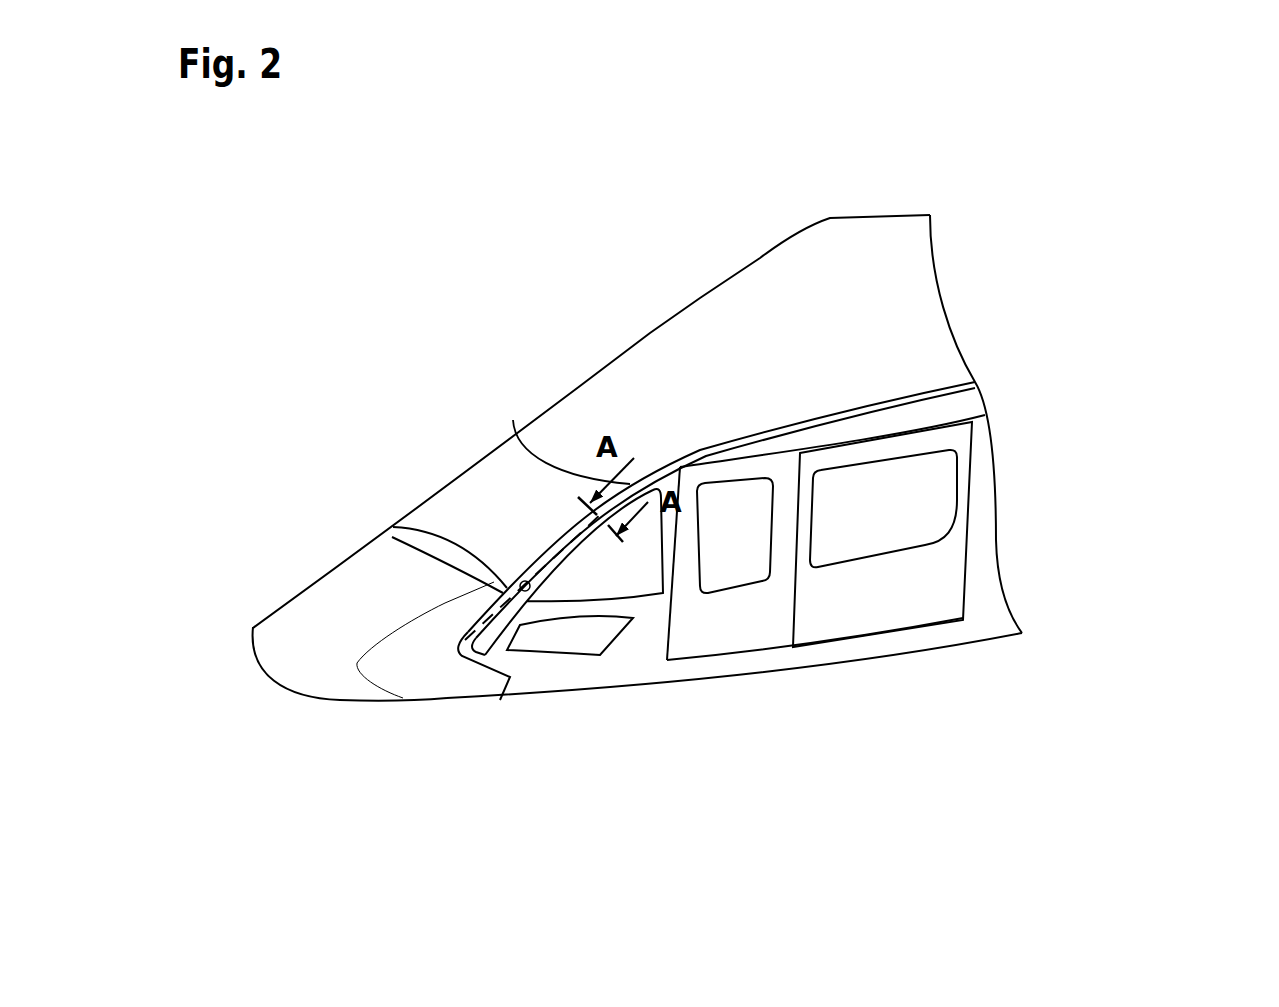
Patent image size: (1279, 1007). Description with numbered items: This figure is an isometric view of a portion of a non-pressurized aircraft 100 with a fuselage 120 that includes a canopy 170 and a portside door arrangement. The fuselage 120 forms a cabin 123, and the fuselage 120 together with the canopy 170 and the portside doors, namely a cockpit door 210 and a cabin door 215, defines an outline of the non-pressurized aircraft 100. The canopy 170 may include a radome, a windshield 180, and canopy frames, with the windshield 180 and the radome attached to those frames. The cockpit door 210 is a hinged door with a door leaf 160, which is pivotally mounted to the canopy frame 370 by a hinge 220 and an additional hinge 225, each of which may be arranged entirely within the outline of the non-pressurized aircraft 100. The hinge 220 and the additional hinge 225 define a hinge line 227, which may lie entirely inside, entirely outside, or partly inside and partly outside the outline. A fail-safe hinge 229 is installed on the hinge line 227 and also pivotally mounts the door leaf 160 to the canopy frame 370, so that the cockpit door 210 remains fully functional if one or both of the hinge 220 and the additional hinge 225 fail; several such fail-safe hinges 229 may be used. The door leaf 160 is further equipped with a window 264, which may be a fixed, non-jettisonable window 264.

The non-pressurized aircraft 100 is at (1160, 193).
The fuselage 120 is at (680, 312).
The cabin 123 is at (857, 669).
The door leaf 160 is at (681, 621).
The canopy 170 is at (487, 428).
The windshield 180 is at (497, 493).
The cockpit door 210 is at (582, 662).
The cabin door 215 is at (924, 630).
The hinge 220 is at (594, 530).
The additional hinge 225 is at (494, 622).
The hinge line 227 is at (552, 580).
The fail-safe hinge 229 is at (517, 576).
The window 264 is at (614, 562).
The canopy frame 370 is at (577, 515).